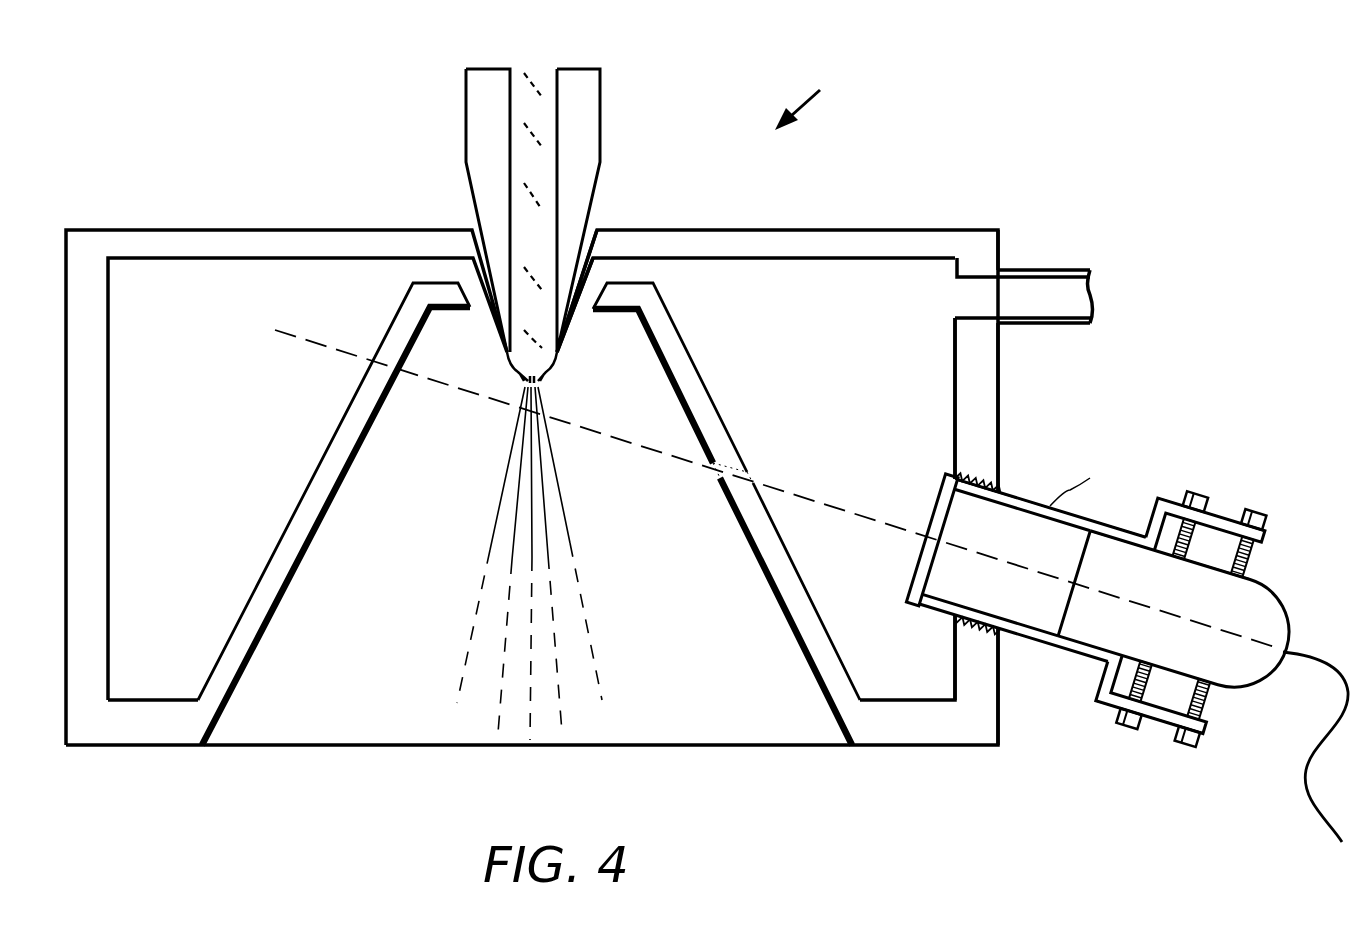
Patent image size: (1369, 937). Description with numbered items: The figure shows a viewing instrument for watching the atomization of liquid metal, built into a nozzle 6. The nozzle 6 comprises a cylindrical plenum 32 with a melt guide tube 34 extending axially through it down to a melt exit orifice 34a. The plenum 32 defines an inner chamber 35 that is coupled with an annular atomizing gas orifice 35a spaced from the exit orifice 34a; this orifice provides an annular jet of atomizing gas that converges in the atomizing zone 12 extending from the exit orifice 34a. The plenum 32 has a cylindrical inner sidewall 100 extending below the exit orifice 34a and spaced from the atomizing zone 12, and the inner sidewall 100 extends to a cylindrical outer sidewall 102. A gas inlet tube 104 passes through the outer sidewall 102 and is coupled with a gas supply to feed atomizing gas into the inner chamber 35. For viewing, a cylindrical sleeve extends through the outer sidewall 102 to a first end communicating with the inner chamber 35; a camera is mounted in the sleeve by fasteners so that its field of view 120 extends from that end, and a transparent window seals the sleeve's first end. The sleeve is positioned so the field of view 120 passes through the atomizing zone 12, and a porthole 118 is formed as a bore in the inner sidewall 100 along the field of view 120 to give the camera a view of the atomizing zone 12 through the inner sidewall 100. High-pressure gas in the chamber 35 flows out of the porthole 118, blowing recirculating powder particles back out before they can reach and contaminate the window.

The nozzle 6 is at (806, 101).
The atomizing zone 12 is at (525, 390).
The cylindrical plenum 32 is at (832, 231).
The melt guide tube 34 is at (595, 118).
The melt exit orifice 34a is at (563, 355).
The inner chamber 35 is at (203, 498).
The annular atomizing gas orifice 35a is at (585, 300).
The cylindrical inner sidewall 100 is at (816, 640).
The cylindrical outer sidewall 102 is at (982, 432).
The gas inlet tube 104 is at (1068, 269).
The porthole 118 is at (748, 470).
The field of view 120 is at (713, 462).